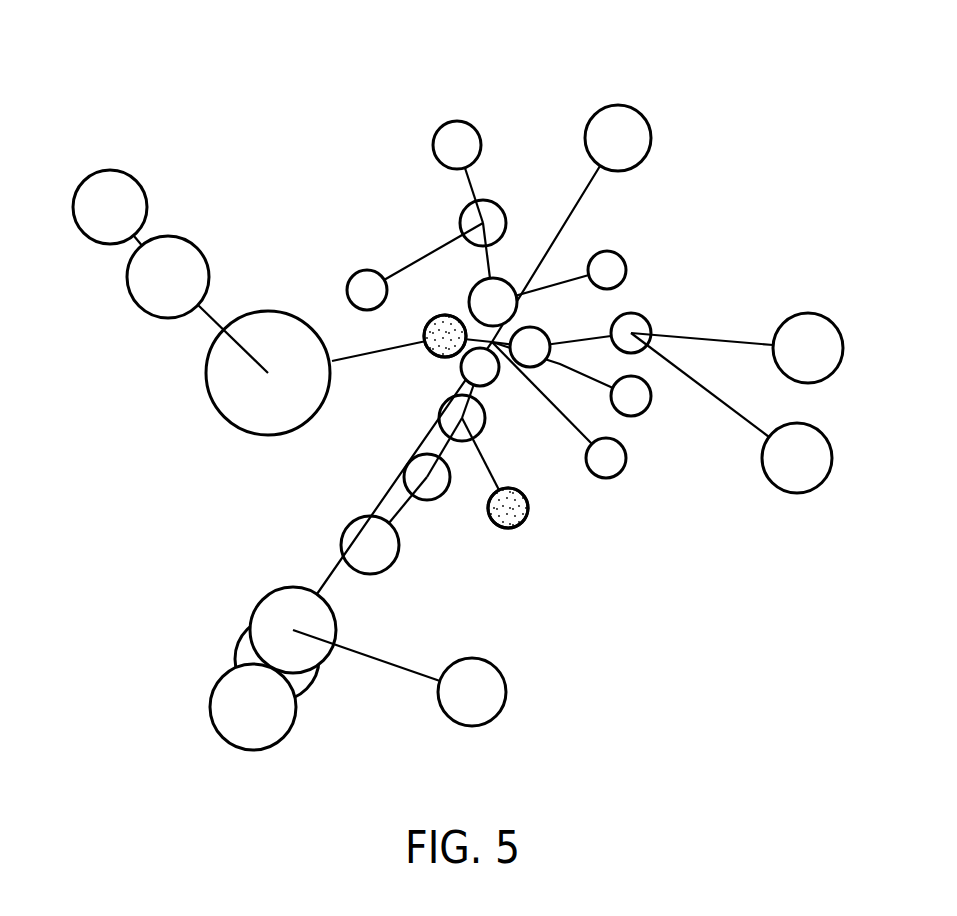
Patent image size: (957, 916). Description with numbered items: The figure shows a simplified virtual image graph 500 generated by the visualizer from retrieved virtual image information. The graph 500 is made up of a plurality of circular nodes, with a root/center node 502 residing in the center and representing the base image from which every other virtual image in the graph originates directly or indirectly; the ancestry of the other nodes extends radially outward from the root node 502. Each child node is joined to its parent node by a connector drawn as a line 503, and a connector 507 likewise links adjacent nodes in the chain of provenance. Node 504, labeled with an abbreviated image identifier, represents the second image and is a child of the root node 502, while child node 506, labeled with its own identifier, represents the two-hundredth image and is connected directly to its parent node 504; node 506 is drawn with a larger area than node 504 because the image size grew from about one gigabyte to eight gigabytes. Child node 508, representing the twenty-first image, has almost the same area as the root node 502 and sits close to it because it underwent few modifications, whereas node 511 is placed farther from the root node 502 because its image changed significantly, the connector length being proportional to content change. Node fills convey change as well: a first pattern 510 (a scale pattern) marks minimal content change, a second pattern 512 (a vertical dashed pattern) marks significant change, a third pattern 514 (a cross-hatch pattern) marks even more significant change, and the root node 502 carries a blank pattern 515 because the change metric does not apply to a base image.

The graph 500 is at (483, 16).
The root/center node 502 is at (503, 328).
The line 503 is at (390, 351).
The node 504 is at (437, 333).
The child node 506 is at (268, 430).
The edge 507 is at (208, 323).
The child node 508 is at (500, 287).
The first pattern 510 is at (622, 263).
The node 511 is at (615, 107).
The second pattern 512 is at (528, 517).
The third pattern 514 is at (195, 248).
The blank pattern 515 is at (498, 366).